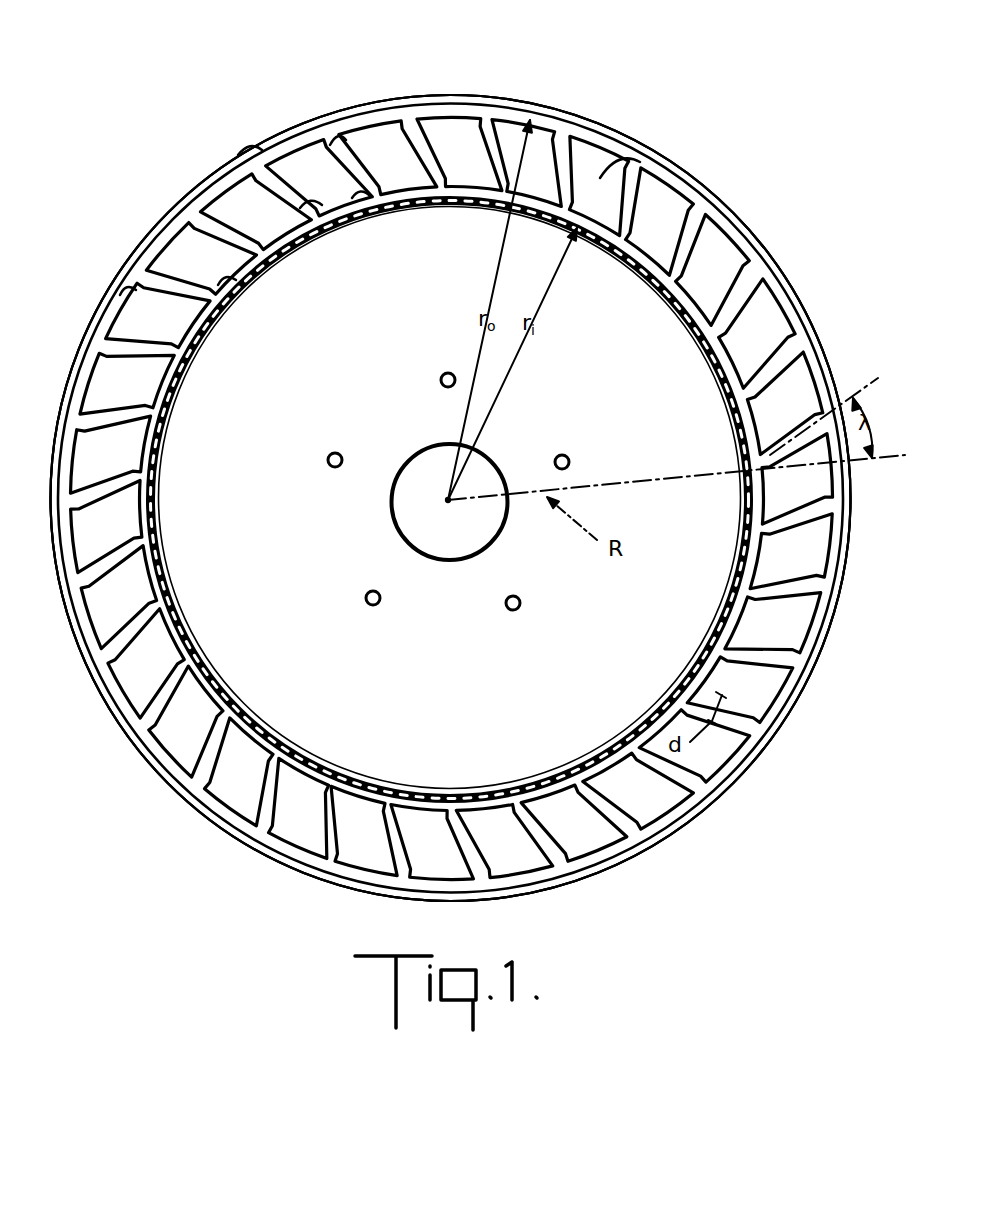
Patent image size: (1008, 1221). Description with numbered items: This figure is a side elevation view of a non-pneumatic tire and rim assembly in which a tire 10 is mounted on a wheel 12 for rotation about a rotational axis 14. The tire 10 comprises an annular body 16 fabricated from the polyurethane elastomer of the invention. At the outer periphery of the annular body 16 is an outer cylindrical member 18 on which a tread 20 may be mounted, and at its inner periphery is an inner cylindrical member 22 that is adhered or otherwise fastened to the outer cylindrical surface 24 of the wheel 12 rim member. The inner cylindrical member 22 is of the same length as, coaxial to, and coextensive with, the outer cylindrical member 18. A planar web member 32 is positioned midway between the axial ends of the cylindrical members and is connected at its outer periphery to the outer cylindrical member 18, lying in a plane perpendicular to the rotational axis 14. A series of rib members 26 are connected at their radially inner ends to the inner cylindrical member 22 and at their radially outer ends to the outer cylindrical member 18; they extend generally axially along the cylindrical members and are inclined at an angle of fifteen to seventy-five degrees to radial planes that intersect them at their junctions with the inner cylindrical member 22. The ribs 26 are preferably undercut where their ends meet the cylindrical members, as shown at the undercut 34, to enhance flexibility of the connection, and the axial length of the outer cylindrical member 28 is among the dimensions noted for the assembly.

The tire 10 is at (770, 227).
The wheel 12 is at (460, 660).
The rotational axis 14 is at (448, 500).
The annular body 16 is at (784, 265).
The outer cylindrical member 18 is at (778, 297).
The tread 20 is at (816, 336).
The inner cylindrical member 22 is at (674, 198).
The outer cylindrical surface 24 is at (707, 347).
The rib members 26 is at (334, 145).
The outer cylindrical member 28 is at (368, 202).
The planar web member 32 is at (657, 203).
The undercut 34 is at (120, 288).